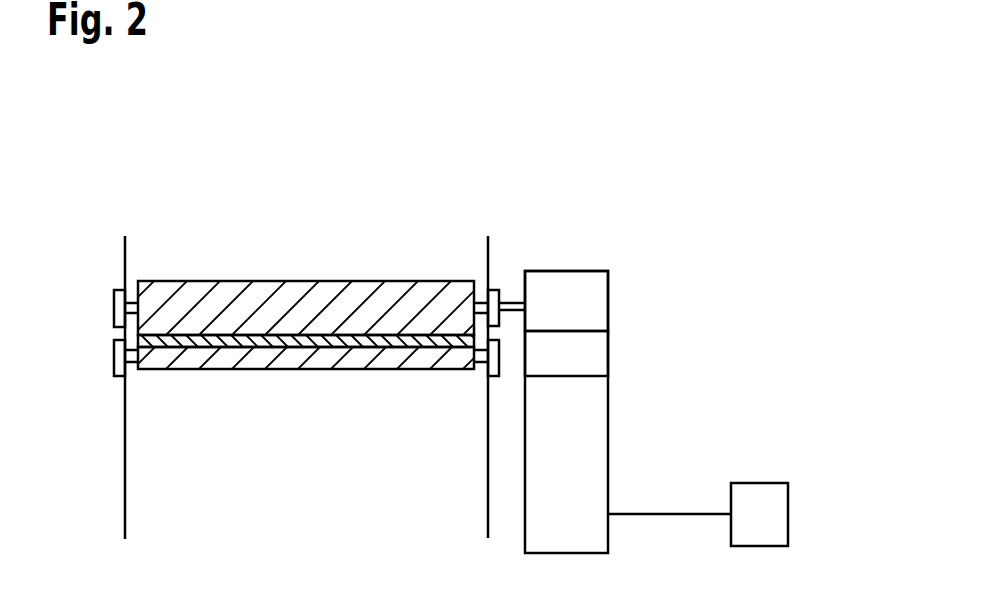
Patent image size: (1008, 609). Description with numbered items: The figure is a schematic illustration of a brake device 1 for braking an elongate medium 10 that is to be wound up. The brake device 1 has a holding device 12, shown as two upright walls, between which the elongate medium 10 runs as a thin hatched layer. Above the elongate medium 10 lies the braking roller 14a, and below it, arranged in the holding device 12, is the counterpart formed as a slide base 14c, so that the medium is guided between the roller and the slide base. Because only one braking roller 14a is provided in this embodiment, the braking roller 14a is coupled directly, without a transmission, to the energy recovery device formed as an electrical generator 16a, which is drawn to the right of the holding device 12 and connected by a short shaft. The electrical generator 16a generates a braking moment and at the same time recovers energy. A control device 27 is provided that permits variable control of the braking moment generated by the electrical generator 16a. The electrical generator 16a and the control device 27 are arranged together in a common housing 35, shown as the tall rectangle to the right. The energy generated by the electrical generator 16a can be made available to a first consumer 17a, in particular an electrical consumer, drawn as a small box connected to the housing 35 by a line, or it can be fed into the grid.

The brake device 1 is at (92, 231).
The holding device 12 is at (125, 487).
The braking roller 14a is at (243, 292).
The elongate medium 10 is at (293, 342).
The slide base 14c is at (353, 360).
The electrical generator 16a is at (598, 295).
The control device 27 is at (598, 358).
The common housing 35 is at (618, 438).
The first consumer 17a is at (778, 512).